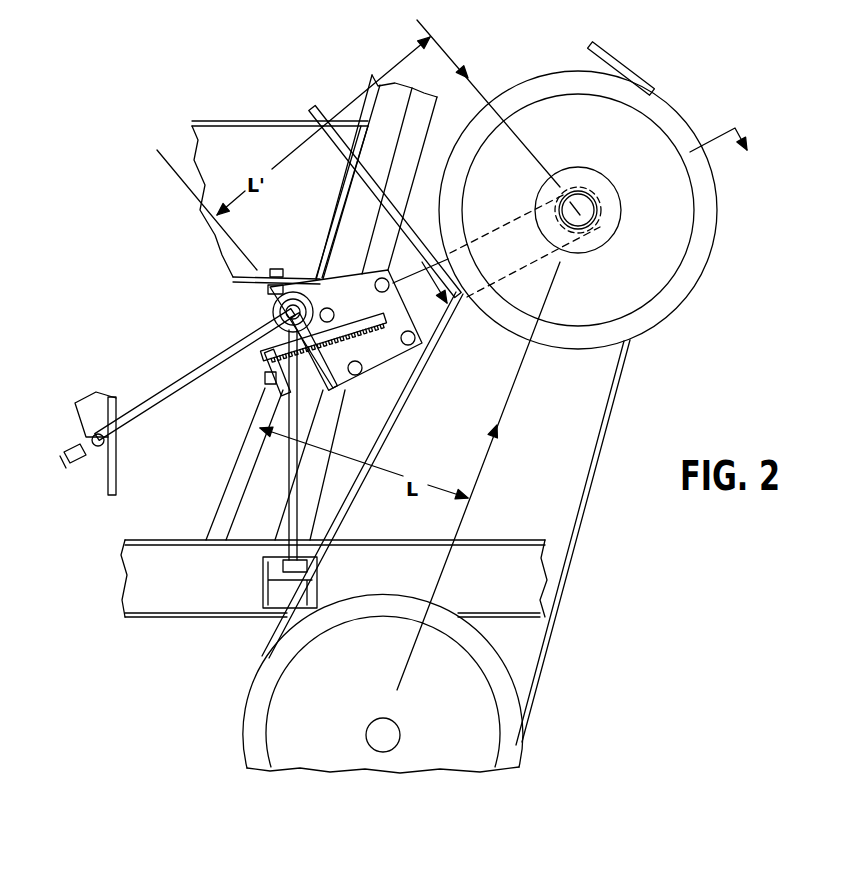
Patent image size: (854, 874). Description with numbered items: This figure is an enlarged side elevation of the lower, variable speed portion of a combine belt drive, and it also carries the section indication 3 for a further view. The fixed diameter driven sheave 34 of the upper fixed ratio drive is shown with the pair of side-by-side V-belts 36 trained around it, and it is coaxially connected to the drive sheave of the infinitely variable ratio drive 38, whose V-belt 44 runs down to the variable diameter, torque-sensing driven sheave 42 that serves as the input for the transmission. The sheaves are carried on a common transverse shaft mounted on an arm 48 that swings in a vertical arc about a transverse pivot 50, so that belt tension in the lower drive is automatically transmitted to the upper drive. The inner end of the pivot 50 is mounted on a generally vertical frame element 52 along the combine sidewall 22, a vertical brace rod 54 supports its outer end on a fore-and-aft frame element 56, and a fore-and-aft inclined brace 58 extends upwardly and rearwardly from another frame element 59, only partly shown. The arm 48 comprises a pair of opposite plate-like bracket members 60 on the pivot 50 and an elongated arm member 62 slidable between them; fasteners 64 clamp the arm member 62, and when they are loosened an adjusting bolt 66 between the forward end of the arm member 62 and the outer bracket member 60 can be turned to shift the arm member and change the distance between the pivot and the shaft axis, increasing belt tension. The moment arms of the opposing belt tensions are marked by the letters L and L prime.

The section line 3- 3 is at (579, 215).
The combine sidewall 22 is at (556, 451).
The fixed diameter driven sheave 34 is at (703, 206).
The V-belts 36 is at (610, 60).
The infinitely variable ratio drive 38 is at (618, 405).
The variable diameter torque-sensing driven sheave 42 is at (386, 602).
The V-belt 44 is at (583, 520).
The arm 48 is at (462, 300).
The transverse pivot 50 is at (282, 310).
The generally vertical frame element 52 is at (326, 427).
The vertical brace rod 54 is at (300, 493).
The fore-and-aft frame element 56 is at (192, 608).
The fore-and-aft inclined brace 58 is at (181, 380).
The frame element 59 is at (117, 470).
The plate-like bracket members 60 is at (358, 309).
The elongated arm member 62 is at (436, 303).
The fasteners 64 is at (359, 375).
The adjusting bolt 66 is at (352, 337).